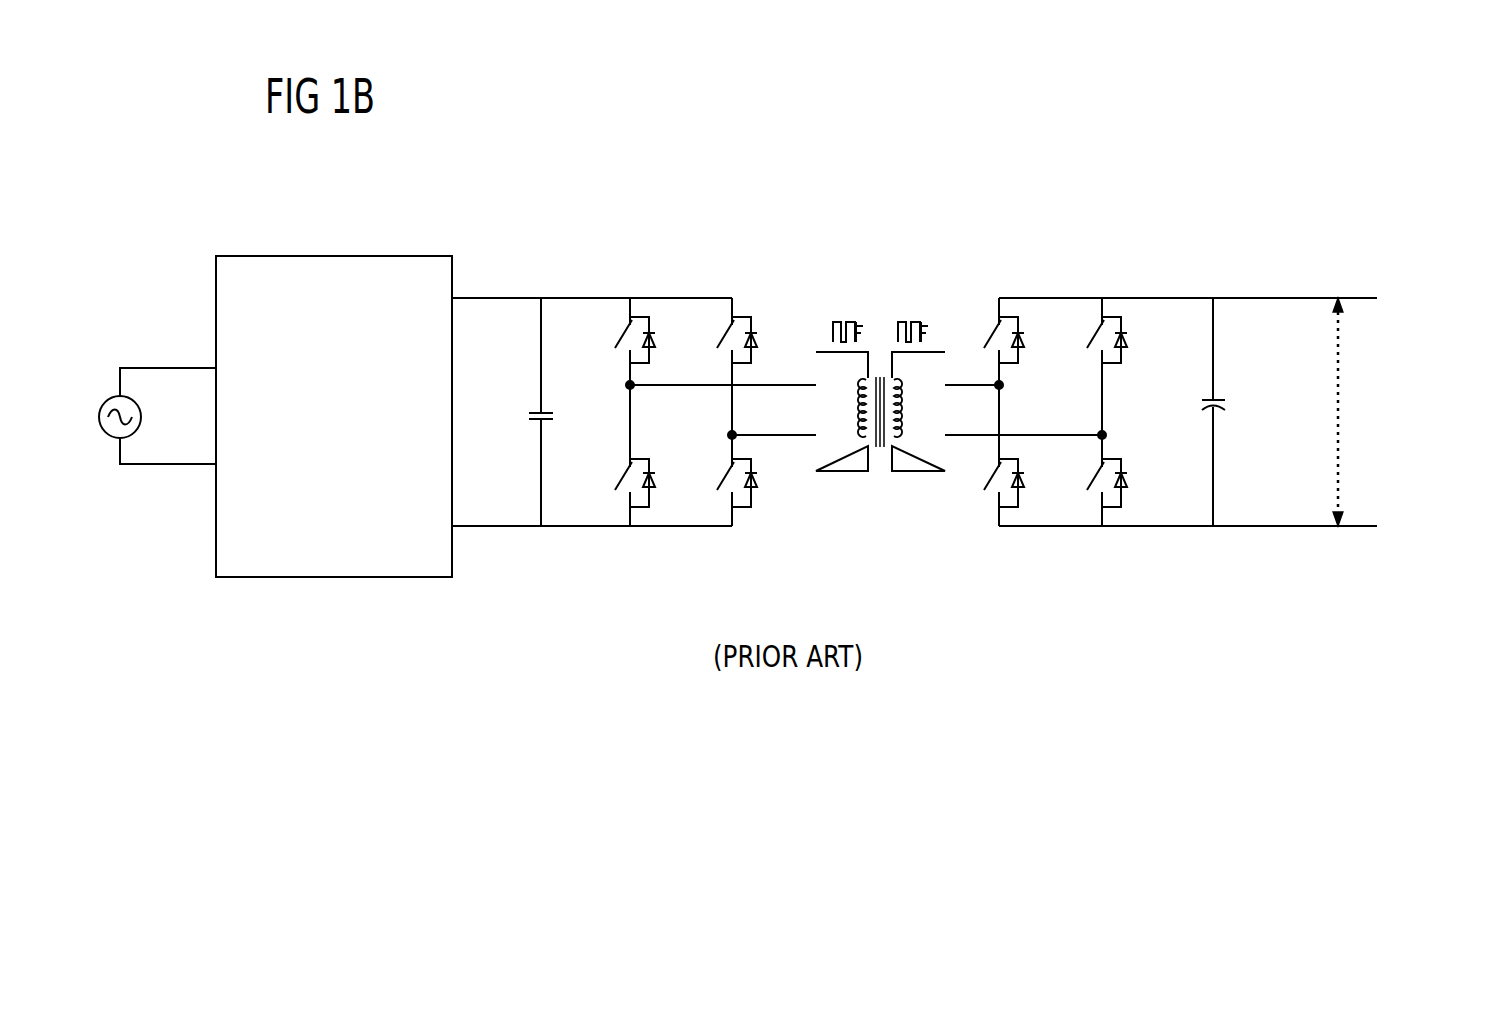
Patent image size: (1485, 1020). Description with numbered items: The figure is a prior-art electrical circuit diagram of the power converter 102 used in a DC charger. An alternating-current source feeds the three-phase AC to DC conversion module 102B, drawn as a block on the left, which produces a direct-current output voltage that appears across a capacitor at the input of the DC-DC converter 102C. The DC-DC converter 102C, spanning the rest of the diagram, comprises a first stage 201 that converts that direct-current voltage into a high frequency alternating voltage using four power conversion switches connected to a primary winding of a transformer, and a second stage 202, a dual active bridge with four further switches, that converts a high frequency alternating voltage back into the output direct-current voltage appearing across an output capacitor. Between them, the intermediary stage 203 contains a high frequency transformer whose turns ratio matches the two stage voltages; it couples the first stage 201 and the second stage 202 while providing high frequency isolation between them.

The power converter 102 is at (1390, 218).
The 3-phase AC to DC conversion module 102B is at (334, 416).
The DC-DC converter 102C is at (458, 255).
The first stage 201 is at (735, 540).
The second stage 202 is at (1377, 540).
The intermediary stage 203 is at (955, 540).